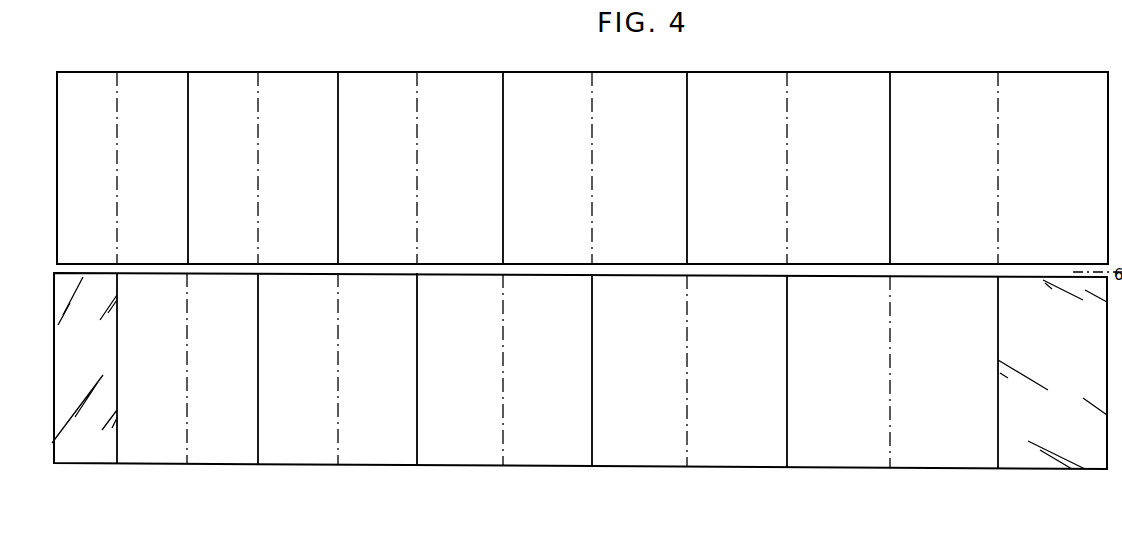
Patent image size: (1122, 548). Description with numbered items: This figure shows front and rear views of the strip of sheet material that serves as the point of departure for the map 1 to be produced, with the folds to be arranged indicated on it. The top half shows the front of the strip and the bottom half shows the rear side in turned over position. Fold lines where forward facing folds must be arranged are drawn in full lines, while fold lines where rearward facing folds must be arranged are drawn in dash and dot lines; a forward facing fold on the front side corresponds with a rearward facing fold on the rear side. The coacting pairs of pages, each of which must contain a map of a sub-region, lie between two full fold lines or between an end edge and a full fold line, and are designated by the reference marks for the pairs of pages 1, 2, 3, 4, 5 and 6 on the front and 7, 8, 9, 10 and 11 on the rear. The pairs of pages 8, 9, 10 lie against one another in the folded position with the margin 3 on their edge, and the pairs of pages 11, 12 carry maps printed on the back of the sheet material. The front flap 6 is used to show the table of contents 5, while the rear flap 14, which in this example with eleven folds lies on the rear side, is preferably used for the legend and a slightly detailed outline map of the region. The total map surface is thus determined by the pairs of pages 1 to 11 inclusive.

The map 1 is at (182, 168).
The pair of pages 2 is at (332, 168).
The margin 3 is at (497, 168).
The pair of pages 4 is at (681, 168).
The table of contents 5 is at (884, 168).
The front flap 6 is at (97, 355).
The pair of pages 7 is at (246, 369).
The pair of pages 8 is at (129, 82).
The pair of pages 9 is at (269, 82).
The pair of pages 10 is at (424, 82).
The pair of pages 11 is at (173, 440).
The pair of pages 12 is at (324, 440).
The rear flap 14 is at (1040, 425).